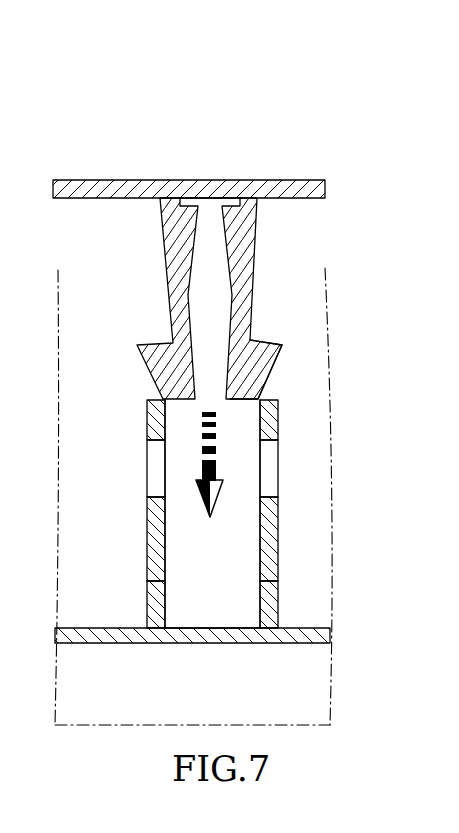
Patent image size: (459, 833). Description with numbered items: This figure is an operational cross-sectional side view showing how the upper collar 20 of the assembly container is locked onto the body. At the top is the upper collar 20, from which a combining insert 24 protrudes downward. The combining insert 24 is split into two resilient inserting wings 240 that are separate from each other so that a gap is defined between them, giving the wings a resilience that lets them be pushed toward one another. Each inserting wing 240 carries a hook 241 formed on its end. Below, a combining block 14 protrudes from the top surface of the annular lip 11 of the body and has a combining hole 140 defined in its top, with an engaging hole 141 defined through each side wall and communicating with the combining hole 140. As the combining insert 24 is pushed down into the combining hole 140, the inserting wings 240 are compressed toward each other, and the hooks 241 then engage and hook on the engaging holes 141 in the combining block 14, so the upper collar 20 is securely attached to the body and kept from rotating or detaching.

The upper collar 20 is at (131, 176).
The combining insert 24 is at (164, 276).
The inserting wing 240 is at (242, 293).
The hook 241 is at (265, 363).
The combining block 14 is at (158, 562).
The engaging hole 141 is at (158, 443).
The combining hole 140 is at (235, 555).
The annular lip 11 is at (302, 630).